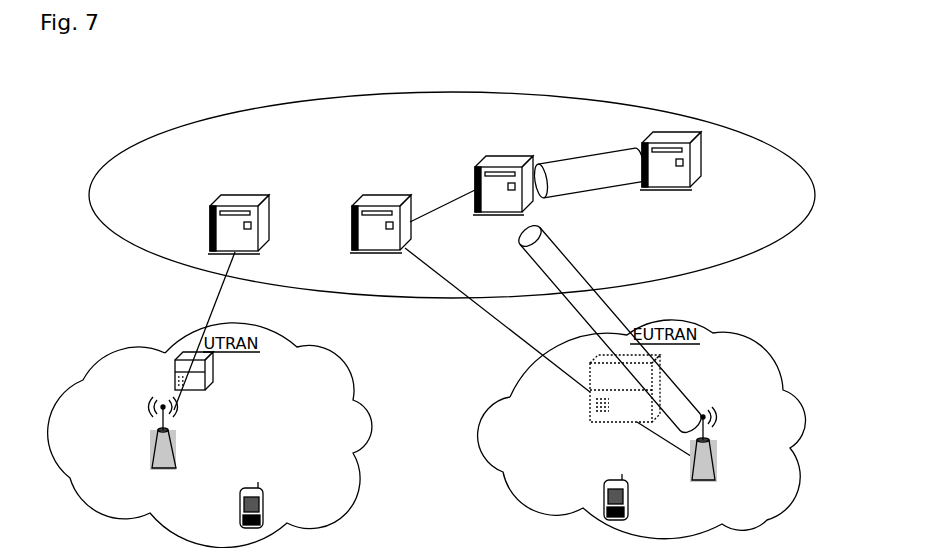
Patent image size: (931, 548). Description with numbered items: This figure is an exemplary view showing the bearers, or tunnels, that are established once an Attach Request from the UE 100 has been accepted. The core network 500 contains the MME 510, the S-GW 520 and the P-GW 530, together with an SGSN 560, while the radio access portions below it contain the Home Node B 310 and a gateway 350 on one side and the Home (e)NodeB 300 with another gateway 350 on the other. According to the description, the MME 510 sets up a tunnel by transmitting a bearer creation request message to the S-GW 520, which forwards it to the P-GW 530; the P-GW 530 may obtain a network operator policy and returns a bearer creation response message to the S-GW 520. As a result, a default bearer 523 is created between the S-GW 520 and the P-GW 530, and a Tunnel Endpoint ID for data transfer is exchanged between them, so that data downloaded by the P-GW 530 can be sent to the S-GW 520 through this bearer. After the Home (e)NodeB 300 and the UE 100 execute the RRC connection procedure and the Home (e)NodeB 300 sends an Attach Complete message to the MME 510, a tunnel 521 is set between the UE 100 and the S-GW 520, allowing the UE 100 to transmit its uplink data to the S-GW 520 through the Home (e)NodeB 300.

The core network 500 is at (448, 92).
The SGSN 560 is at (243, 194).
The MME 510 is at (370, 200).
The S-GW 520 is at (513, 157).
The default bearer 523 is at (581, 160).
The P-GW 530 is at (683, 132).
The tunnel 521 is at (611, 309).
The gateway 350 is at (214, 370).
The Home Node B 310 is at (152, 402).
The Home (e)NodeB 300 is at (705, 412).
The UE 100 is at (259, 480).